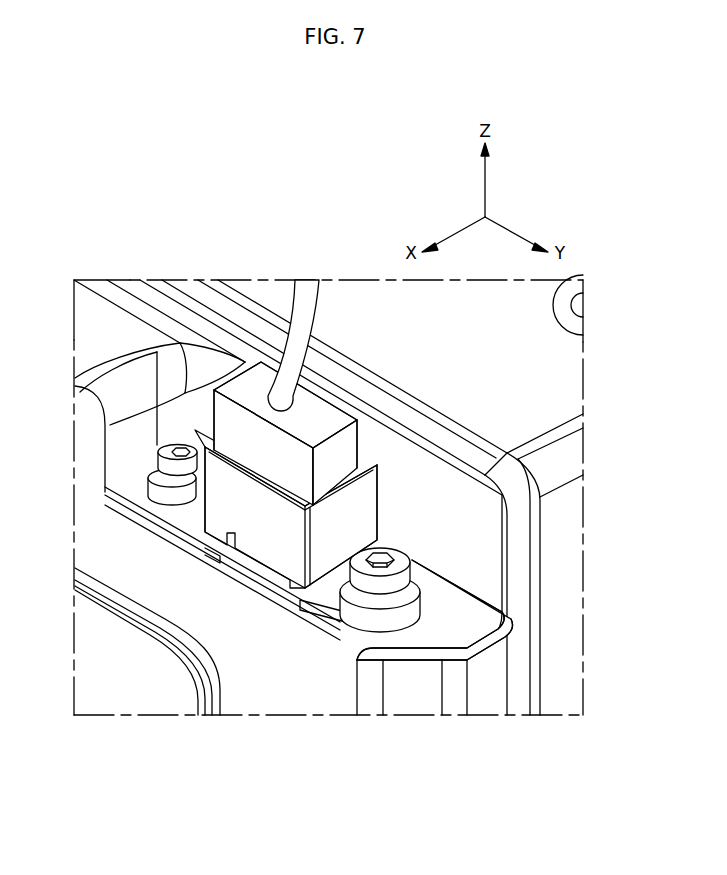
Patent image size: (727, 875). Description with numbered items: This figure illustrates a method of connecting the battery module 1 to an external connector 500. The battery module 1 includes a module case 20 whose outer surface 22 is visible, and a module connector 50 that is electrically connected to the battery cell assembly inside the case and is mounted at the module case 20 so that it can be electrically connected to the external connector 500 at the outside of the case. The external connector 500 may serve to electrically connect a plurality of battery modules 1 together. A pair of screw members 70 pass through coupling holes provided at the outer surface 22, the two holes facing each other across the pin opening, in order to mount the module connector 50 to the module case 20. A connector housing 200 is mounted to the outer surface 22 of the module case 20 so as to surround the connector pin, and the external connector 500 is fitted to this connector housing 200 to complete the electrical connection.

The battery module 1 is at (89, 240).
The module case 20 is at (556, 382).
The outer surface 22 is at (424, 633).
The module connector 50 is at (234, 585).
The screw member 70 is at (165, 452).
The connector housing 200 is at (383, 469).
The external connector 500 is at (319, 394).